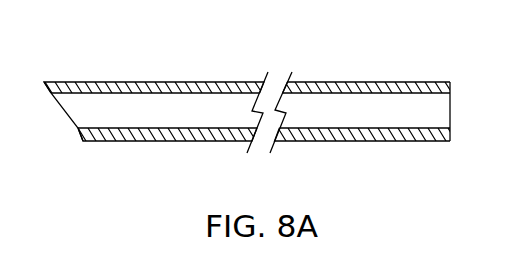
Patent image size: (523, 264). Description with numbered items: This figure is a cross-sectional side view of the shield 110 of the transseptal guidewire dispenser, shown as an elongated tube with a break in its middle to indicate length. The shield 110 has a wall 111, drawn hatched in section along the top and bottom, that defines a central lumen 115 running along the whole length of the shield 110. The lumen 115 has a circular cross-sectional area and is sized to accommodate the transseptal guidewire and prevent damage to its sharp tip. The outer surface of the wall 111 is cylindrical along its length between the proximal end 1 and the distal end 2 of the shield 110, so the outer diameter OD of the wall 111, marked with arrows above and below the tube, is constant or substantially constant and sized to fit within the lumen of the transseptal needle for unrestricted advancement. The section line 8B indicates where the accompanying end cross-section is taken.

The proximal end 1 is at (256, 105).
The distal end 2 is at (58, 106).
The shield 110 is at (250, 99).
The wall 111 is at (389, 82).
The lumen 115 is at (348, 119).
The section line 8B- 8B is at (92, 80).
The outer diameter OD is at (213, 76).